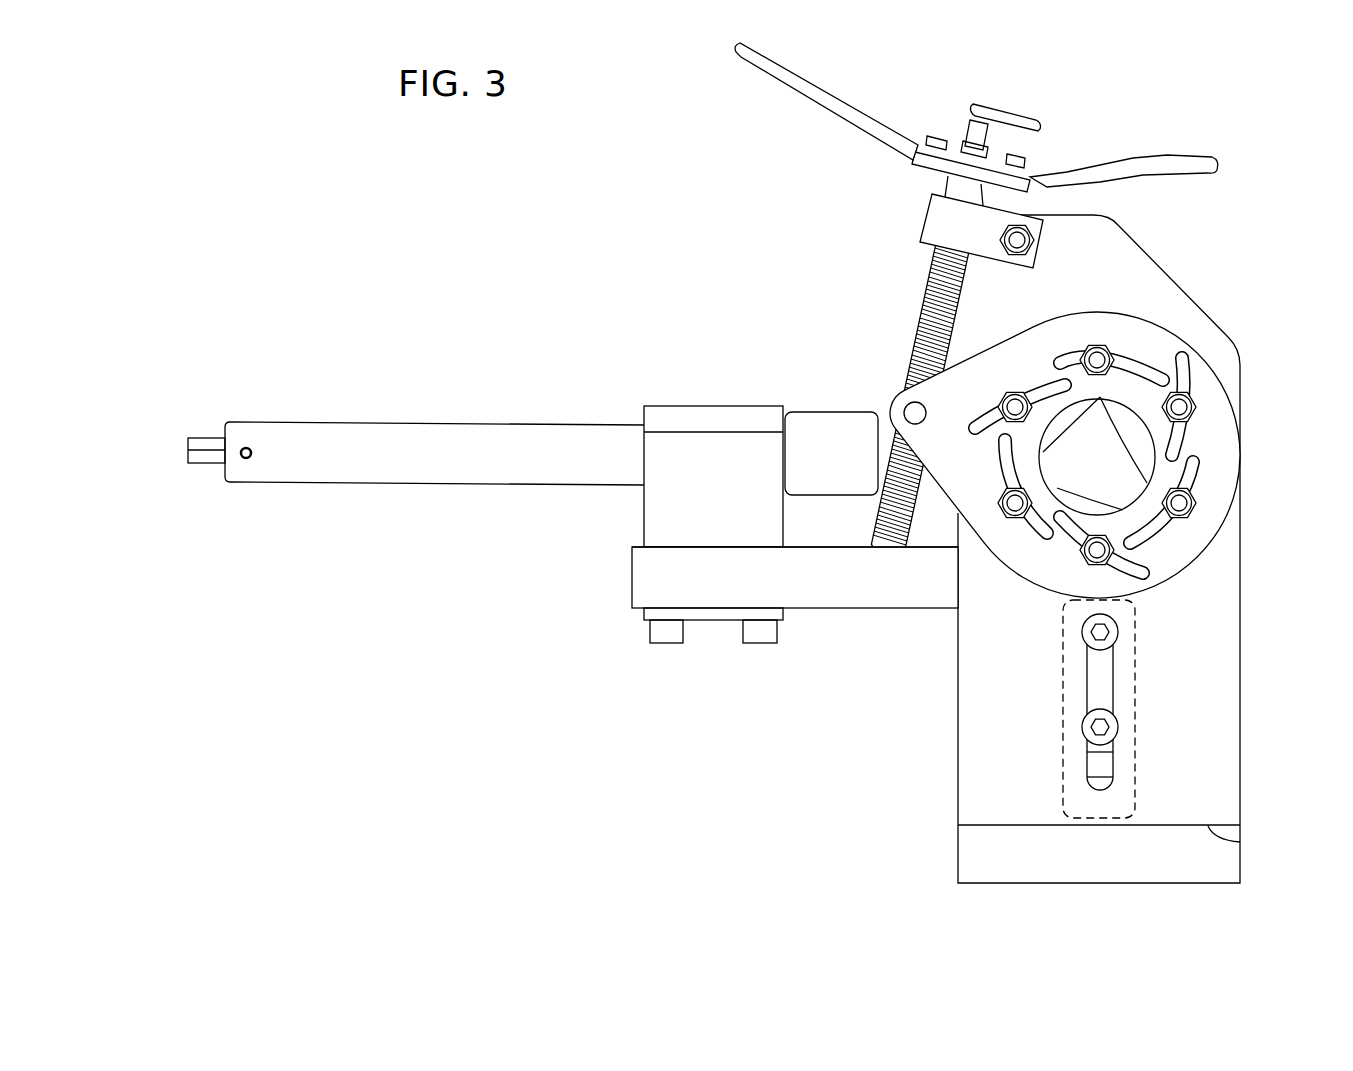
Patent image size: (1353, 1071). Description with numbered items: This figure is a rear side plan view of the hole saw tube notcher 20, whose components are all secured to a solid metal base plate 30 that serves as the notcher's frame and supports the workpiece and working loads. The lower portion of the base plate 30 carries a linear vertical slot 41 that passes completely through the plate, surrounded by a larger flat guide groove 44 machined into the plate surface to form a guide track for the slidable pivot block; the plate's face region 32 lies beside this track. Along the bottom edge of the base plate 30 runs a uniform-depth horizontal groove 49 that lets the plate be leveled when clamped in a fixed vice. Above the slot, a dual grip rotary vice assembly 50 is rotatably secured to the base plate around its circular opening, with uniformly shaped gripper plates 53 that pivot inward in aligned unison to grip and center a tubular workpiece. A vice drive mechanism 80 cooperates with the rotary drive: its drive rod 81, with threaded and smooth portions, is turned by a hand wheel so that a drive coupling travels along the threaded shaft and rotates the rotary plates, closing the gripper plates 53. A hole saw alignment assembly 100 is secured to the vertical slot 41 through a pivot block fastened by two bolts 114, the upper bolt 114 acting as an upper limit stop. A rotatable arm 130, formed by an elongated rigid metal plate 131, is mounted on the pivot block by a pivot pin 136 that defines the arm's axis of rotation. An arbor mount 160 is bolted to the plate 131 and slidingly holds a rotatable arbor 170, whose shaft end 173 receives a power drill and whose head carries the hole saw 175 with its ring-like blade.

The hole saw tube notcher 20 is at (757, 288).
The base plate 30 is at (1243, 672).
The front face of body 32 is at (1210, 730).
The vertical slot 41 is at (1115, 676).
The guide groove 44 is at (1135, 642).
The horizontal groove 49 is at (1240, 841).
The dual grip rotary vice assembly 50 is at (1083, 430).
The gripper plate 53 is at (1138, 424).
The vice drive mechanism 80 is at (882, 122).
The drive rod 81 is at (922, 310).
The hole saw alignment assembly 100 is at (573, 516).
The bolt 114 is at (1110, 732).
The rotatable arm 130 is at (858, 610).
The elongated rigid metal plate 131 is at (818, 594).
The pivot pin 136 is at (1105, 768).
The arbor mount 160 is at (698, 410).
The rotatable arbor 170 is at (547, 423).
The arbor shaft end 173 is at (203, 440).
The hole saw 175 is at (850, 468).